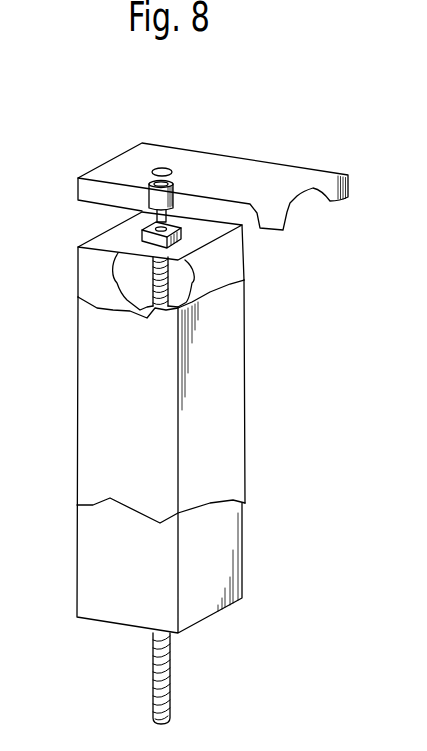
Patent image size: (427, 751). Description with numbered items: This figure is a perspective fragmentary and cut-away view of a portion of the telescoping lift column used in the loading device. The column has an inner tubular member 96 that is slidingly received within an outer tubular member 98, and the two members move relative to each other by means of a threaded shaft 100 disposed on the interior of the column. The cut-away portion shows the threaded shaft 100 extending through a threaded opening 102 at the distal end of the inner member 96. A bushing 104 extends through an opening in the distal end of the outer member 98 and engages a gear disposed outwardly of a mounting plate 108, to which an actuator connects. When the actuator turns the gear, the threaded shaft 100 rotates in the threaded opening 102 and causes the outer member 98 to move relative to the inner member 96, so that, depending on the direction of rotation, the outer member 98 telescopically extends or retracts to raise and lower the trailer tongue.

The inner tubular member 96 is at (90, 275).
The outer tubular member 98 is at (88, 400).
The threaded shaft 100 is at (153, 306).
The threaded opening 102 is at (142, 231).
The bushing 104 is at (175, 197).
The mounting plate 108 is at (228, 183).